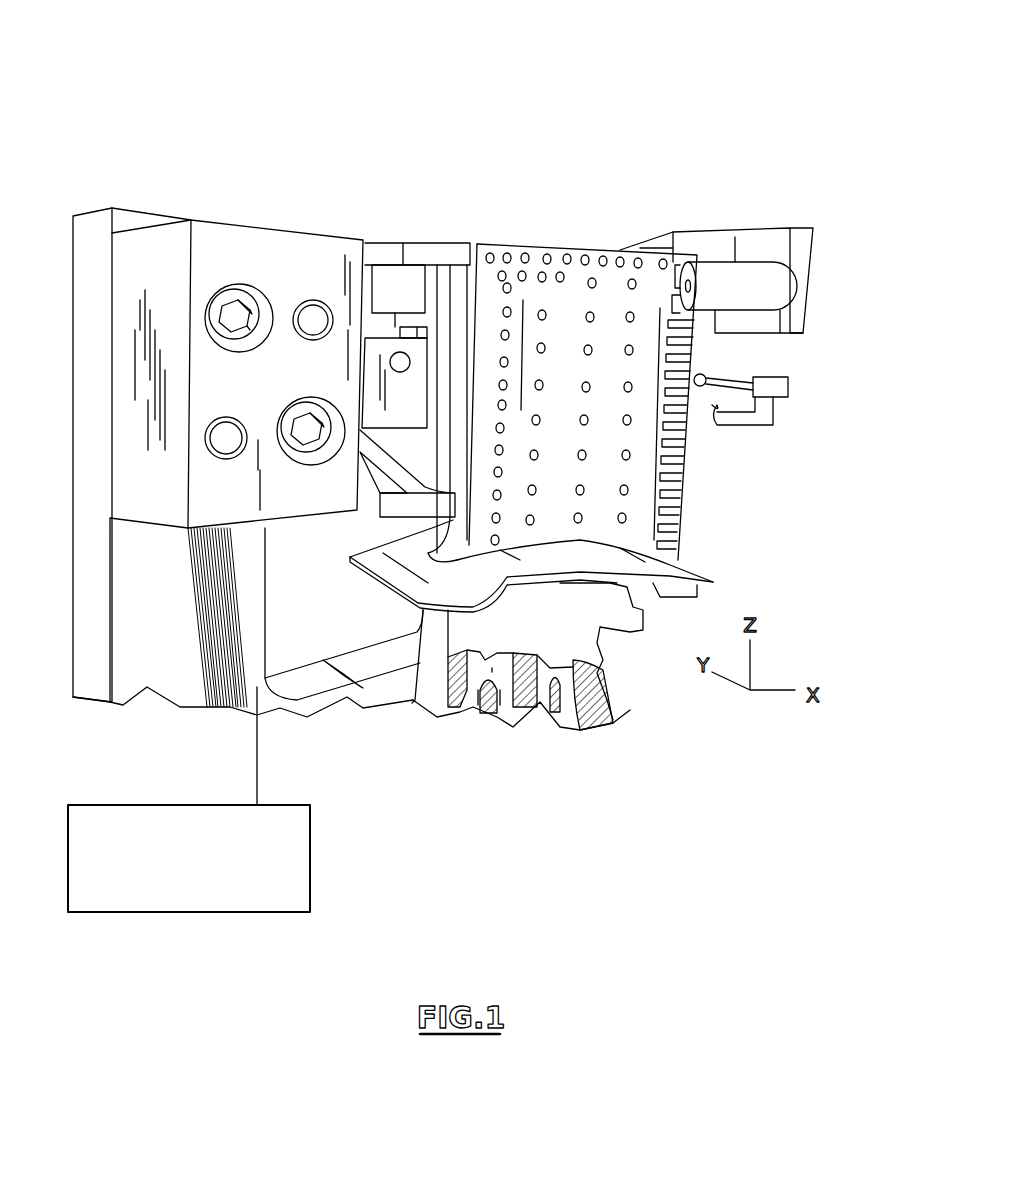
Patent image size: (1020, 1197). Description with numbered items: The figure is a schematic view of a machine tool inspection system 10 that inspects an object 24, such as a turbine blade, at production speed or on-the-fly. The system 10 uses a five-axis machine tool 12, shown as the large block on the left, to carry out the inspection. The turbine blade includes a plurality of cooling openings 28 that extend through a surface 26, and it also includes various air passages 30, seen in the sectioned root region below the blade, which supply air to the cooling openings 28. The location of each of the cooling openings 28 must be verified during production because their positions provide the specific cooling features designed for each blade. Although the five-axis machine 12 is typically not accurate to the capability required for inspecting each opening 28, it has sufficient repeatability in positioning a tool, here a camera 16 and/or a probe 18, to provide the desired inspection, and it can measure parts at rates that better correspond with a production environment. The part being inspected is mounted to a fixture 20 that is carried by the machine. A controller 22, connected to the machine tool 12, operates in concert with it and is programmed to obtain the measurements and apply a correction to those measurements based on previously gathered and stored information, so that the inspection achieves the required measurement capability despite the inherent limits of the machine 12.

The machine tool inspection system 10 is at (653, 78).
The 5-axis machine tool 12 is at (193, 663).
The camera 16 is at (708, 275).
The probe 18 is at (788, 385).
The fixture 20 is at (400, 505).
The controller 22 is at (233, 895).
The object 24 is at (564, 357).
The surface 26 is at (648, 463).
The openings 28 is at (543, 277).
The air passages 30 is at (500, 715).